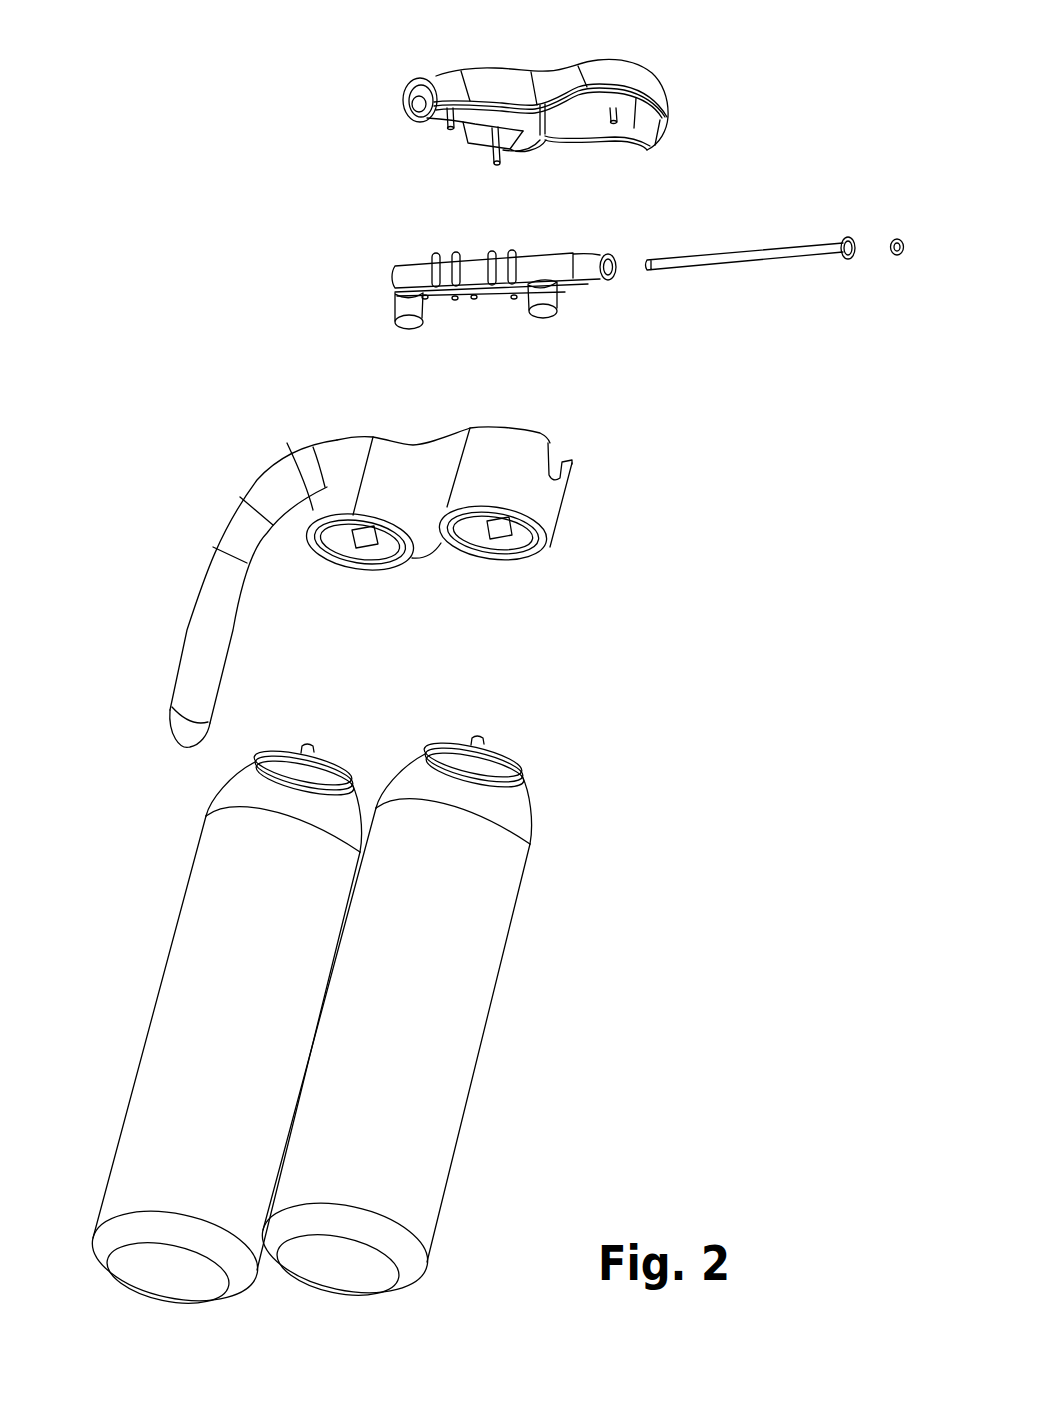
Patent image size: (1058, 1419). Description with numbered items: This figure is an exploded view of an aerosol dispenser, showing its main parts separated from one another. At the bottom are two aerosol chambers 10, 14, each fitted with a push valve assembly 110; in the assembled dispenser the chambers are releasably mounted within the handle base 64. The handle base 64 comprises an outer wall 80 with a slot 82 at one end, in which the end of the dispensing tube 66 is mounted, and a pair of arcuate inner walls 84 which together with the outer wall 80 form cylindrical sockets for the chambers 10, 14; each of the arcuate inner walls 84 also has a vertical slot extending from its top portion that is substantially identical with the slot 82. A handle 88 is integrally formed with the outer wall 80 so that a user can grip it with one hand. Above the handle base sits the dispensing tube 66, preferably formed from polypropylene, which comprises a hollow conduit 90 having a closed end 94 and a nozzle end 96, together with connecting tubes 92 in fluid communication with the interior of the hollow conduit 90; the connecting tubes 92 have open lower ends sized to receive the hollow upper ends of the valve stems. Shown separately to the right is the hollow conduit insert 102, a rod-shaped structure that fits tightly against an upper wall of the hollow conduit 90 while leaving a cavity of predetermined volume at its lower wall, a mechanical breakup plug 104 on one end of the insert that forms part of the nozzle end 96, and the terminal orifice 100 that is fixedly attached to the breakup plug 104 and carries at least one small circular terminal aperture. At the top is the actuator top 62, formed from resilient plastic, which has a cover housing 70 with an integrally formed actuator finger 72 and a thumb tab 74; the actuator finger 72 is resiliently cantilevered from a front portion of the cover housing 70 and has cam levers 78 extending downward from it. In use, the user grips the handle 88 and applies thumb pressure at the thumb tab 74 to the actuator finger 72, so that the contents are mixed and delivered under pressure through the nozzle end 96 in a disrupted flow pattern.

The aerosol chamber 10 is at (213, 853).
The aerosol chamber 14 is at (497, 928).
The actuator top 62 is at (527, 108).
The handle base 64 is at (370, 577).
The dispensing tube 66 is at (477, 270).
The cover housing 70 is at (653, 91).
The actuator finger 72 is at (433, 80).
The thumb tab 74 is at (402, 107).
The cam lever 78 is at (557, 137).
The outer wall 80 is at (548, 501).
The slot 82 is at (557, 458).
The arcuate inner walls 84 is at (412, 533).
The handle 88 is at (223, 587).
The hollow conduit 90 is at (611, 258).
The connecting tubes 92 is at (405, 305).
The closed end 94 is at (392, 281).
The nozzle end 96 is at (613, 278).
The terminal orifice 100 is at (901, 239).
The hollow conduit insert 102 is at (797, 242).
The mechanical breakup plug 104 is at (848, 238).
The push valve assembly 110 is at (319, 747).